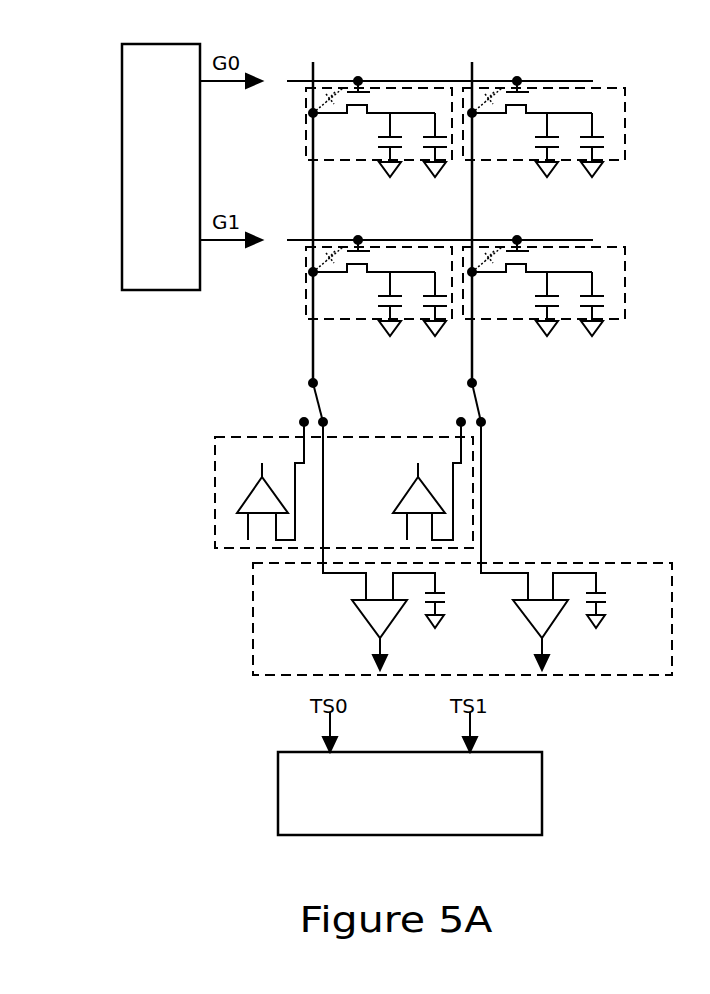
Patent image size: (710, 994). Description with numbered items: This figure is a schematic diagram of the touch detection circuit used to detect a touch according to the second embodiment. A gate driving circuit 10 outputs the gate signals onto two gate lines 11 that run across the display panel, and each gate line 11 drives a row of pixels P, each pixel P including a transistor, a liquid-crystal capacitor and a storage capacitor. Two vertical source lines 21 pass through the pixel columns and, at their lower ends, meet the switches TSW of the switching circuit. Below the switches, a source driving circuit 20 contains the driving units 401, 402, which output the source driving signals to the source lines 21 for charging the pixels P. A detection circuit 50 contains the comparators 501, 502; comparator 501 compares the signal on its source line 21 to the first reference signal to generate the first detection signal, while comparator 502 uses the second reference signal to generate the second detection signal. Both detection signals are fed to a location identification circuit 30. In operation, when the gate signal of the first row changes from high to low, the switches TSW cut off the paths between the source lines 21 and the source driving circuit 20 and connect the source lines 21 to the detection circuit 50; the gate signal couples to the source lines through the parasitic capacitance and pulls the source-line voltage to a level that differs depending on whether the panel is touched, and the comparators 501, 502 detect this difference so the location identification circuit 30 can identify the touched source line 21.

The gate driving circuit 10 is at (148, 290).
The gate line 11 is at (385, 240).
The source driving circuit 20 is at (223, 437).
The source line 21 is at (312, 332).
The location identification circuit 30 is at (542, 768).
The driving unit 401 is at (260, 487).
The driving unit 402 is at (417, 487).
The detection circuit 50 is at (253, 595).
The comparator 501 is at (357, 611).
The comparator 502 is at (552, 622).
The pixel P is at (462, 182).
The switch TSW is at (450, 396).